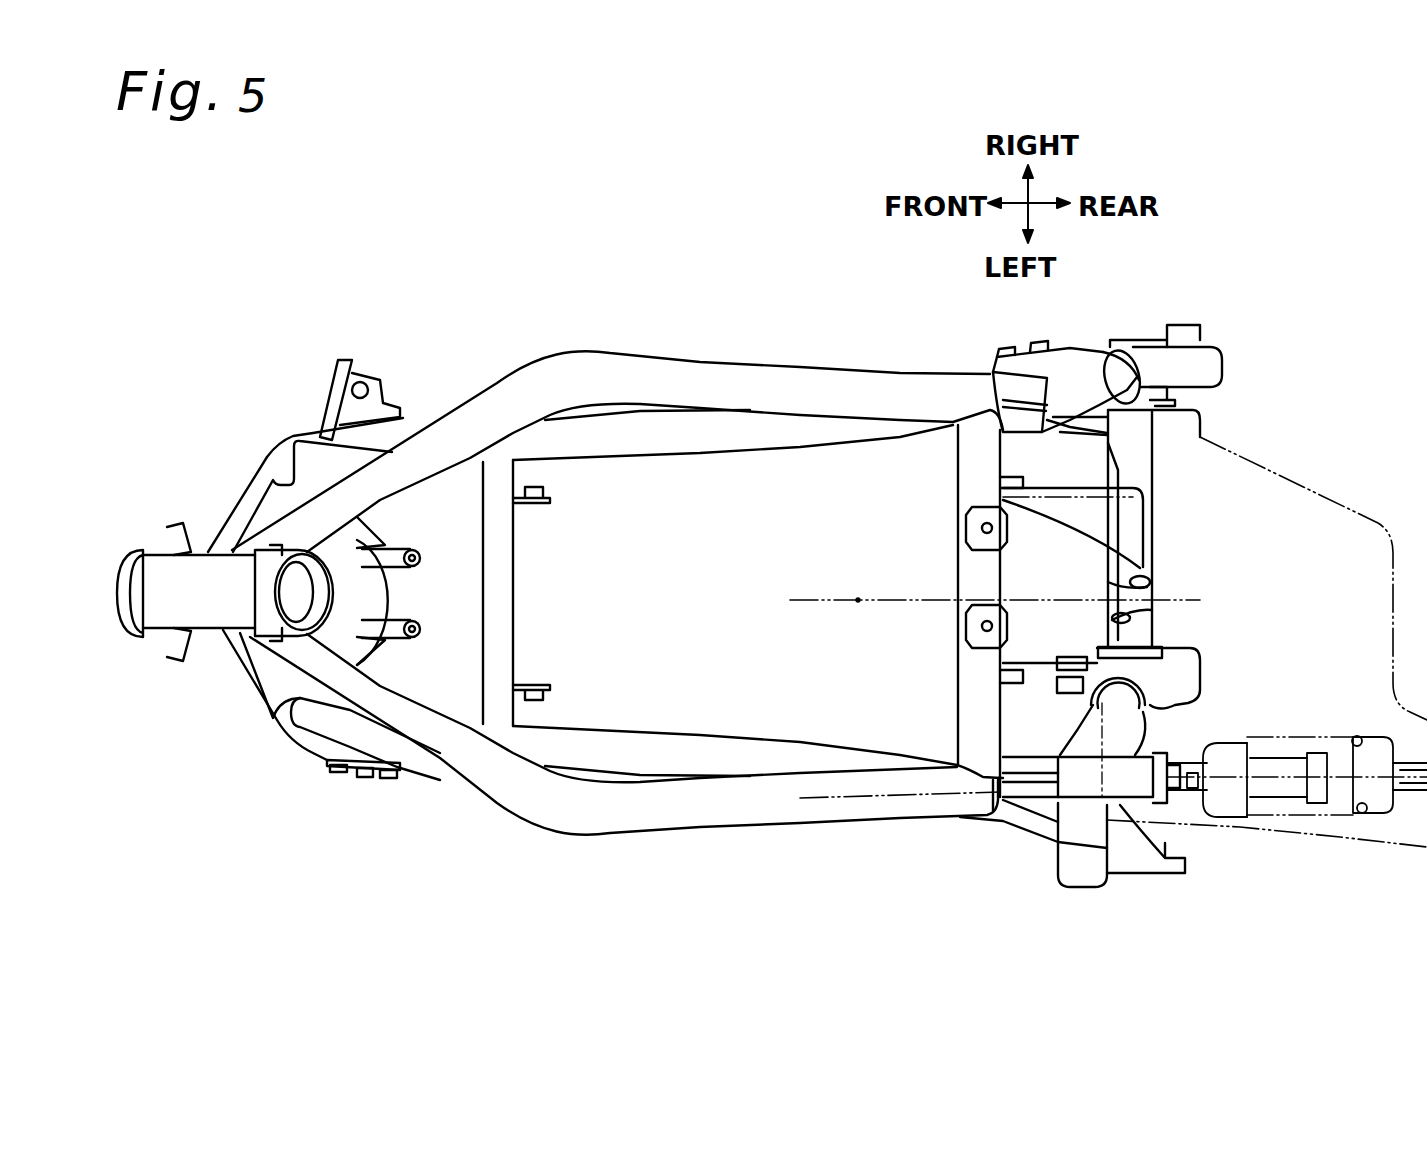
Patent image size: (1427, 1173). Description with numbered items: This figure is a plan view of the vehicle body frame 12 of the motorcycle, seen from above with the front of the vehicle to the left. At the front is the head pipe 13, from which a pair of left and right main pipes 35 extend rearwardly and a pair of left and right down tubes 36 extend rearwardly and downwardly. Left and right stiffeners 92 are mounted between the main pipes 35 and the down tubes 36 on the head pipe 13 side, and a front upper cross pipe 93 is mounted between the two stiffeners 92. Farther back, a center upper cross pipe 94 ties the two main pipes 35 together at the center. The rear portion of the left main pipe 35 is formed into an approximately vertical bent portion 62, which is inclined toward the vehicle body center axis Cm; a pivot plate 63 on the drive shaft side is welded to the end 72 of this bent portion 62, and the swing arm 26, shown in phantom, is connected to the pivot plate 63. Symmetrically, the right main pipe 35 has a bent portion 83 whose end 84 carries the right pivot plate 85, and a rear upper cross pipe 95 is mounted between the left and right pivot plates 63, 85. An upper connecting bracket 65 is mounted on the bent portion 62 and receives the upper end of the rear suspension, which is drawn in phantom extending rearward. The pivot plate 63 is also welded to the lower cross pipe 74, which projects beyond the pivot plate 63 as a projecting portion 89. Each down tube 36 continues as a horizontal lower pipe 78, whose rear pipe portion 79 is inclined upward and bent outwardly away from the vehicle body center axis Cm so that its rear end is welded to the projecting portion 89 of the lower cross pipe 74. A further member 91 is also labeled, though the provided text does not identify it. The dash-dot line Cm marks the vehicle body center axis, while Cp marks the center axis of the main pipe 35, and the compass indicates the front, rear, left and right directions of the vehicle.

The vehicle body frame 12 is at (367, 302).
The head pipe 13 is at (210, 565).
The swing arm 26 is at (1355, 503).
The main pipes 35 is at (650, 355).
The down tubes 36 is at (547, 462).
The bent portion 62 is at (1070, 748).
The pivot plate 63 is at (1173, 683).
The upper connecting bracket 65 is at (1087, 793).
The end of the bent portion 72 is at (1110, 700).
The lower cross pipe 74 is at (1143, 592).
The lower pipe 78 is at (727, 458).
The rear pipe portion 79 is at (1027, 828).
The bent portion 83 is at (1070, 348).
The end of the bent portion 84 is at (1123, 370).
The right pivot plate 85 is at (1218, 350).
The projecting portion 89 is at (1113, 877).
The lower bracket 91 is at (1063, 880).
The stiffeners 92 is at (437, 392).
The front upper cross pipe 93 is at (513, 557).
The center upper cross pipe 94 is at (958, 488).
The rear upper cross pipe 95 is at (1153, 477).
The vehicle body center axis Cm is at (858, 600).
The center axis of the main pipe Cp is at (905, 797).